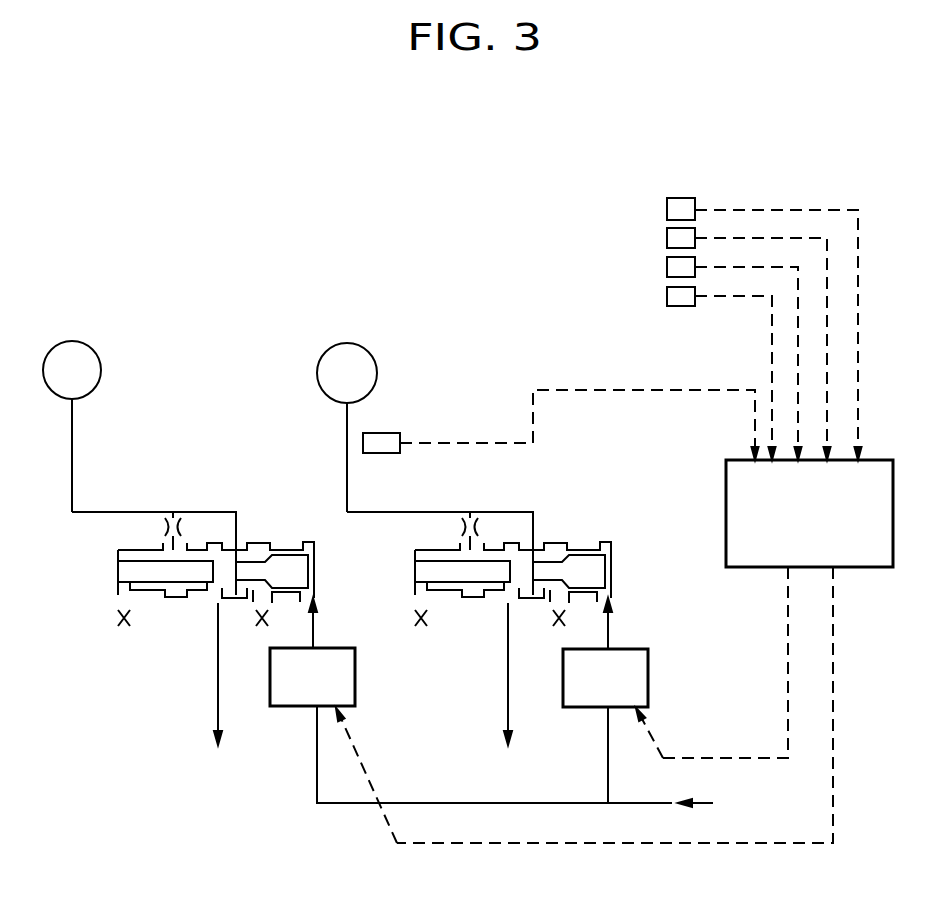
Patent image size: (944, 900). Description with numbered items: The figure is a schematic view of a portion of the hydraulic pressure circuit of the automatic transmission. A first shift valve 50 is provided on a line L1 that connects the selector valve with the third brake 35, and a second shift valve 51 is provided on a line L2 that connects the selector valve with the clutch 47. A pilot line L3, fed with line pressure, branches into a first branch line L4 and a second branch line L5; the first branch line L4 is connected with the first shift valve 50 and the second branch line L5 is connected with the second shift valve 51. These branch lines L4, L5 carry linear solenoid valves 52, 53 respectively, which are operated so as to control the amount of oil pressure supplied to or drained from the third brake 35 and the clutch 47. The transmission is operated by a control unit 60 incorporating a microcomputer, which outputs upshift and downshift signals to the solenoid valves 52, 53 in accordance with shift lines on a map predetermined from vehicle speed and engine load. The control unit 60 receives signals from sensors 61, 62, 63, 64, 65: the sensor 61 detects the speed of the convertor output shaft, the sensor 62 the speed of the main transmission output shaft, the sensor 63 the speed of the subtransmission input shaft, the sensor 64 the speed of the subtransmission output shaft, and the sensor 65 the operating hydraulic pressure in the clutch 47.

The third brake 35 is at (87, 342).
The clutch 47 is at (360, 346).
The first shift valve 50 is at (118, 566).
The second shift valve 51 is at (415, 566).
The linear solenoid valve 52 is at (356, 678).
The linear solenoid valve 53 is at (649, 677).
The control unit 60 is at (726, 498).
The sensor 61 is at (667, 206).
The sensor 62 is at (667, 239).
The sensor 63 is at (667, 267).
The sensor 64 is at (667, 297).
The sensor 65 is at (395, 432).
The line L1 is at (218, 657).
The line L2 is at (508, 657).
The pilot line L3 is at (614, 806).
The first branch line L4 is at (335, 805).
The second branch line L5 is at (609, 782).